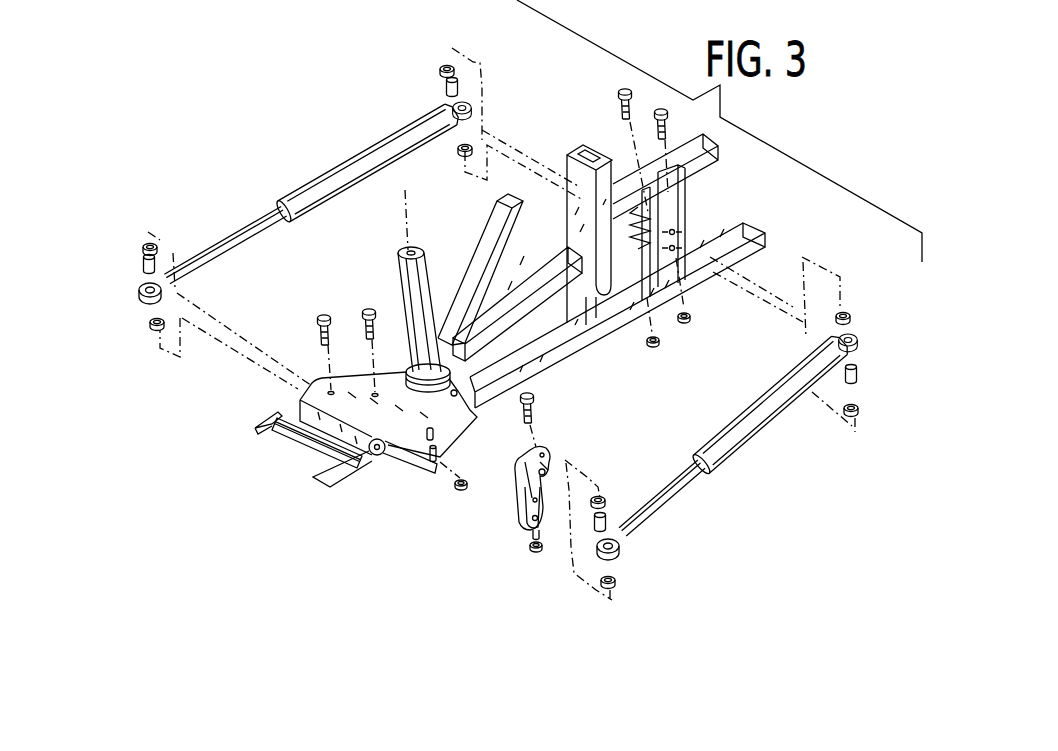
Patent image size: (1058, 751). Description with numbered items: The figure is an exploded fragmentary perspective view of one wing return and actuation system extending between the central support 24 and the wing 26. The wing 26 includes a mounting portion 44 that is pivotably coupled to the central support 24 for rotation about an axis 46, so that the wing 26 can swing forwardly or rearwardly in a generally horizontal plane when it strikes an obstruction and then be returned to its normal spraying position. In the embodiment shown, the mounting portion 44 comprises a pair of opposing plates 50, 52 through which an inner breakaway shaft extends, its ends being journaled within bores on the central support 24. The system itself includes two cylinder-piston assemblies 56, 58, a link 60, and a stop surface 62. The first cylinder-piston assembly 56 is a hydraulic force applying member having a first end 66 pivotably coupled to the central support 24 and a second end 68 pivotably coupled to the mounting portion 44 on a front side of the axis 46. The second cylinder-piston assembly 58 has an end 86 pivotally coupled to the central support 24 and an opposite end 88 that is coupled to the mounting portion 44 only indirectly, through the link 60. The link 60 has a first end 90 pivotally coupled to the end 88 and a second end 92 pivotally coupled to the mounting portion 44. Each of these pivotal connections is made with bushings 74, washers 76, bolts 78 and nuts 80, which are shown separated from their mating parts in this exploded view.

The central support 24 is at (705, 240).
The wing 26 is at (262, 437).
The mounting portion 44 is at (415, 472).
The axis 46 is at (410, 222).
The plate 50 is at (311, 388).
The plate 52 is at (402, 455).
The cylinder-piston assembly 56 is at (356, 163).
The cylinder-piston assembly 58 is at (747, 438).
The link 60 is at (518, 515).
The stop surface 62 is at (433, 463).
The first end 66 is at (451, 107).
The second end 68 is at (139, 290).
The bushing 74 is at (157, 260).
The washer 76 is at (144, 245).
The bolt 78 is at (321, 330).
The nut 80 is at (651, 344).
The end 86 is at (860, 341).
The end 88 is at (620, 548).
The first end 90 is at (530, 537).
The second end 92 is at (546, 452).